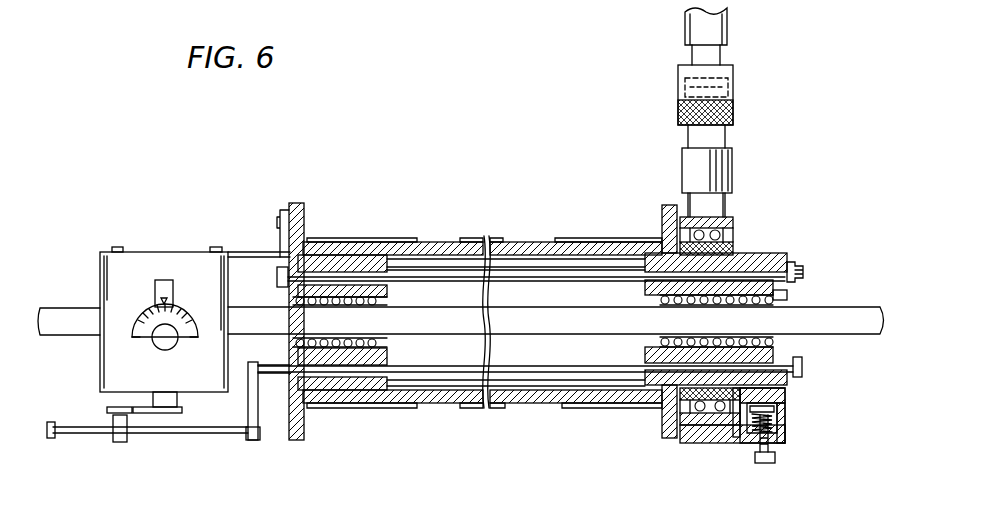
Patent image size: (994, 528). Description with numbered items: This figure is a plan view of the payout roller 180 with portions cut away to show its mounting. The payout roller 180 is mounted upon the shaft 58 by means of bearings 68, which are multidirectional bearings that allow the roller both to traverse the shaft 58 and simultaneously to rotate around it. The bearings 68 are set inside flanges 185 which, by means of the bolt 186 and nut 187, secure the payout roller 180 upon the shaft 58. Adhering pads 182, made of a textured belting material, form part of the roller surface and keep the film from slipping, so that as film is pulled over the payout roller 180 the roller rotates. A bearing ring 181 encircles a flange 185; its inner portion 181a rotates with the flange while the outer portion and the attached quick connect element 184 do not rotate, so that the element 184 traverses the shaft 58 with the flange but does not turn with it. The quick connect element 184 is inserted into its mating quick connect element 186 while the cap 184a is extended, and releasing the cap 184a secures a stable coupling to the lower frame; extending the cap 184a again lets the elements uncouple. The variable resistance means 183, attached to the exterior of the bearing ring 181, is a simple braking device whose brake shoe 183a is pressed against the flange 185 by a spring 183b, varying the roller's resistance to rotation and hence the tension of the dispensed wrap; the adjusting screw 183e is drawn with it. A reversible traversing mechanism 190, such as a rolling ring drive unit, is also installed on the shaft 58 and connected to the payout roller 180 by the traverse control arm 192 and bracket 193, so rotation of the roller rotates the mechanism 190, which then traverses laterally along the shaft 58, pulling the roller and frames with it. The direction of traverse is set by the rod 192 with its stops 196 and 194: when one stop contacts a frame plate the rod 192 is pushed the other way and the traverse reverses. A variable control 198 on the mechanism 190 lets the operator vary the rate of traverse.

The shaft 58 is at (866, 334).
The bearings 68 is at (290, 298).
The payout roller 180 is at (440, 240).
The bearing ring 181 is at (733, 217).
The inner portion of the bearing ring 181a is at (735, 243).
The adhering pads 182 is at (352, 237).
The variable resistance means 183 is at (730, 444).
The brake shoe 183a is at (784, 392).
The spring 183b is at (780, 418).
The adjusting screw 183e is at (775, 460).
The quick connect element 184 is at (733, 113).
The cap 184a is at (732, 82).
The flanges 185 is at (293, 203).
The bolt 186 is at (722, 53).
The nut 187 is at (797, 262).
The reversible traversing mechanism 190 is at (108, 268).
The traverse control arm 192 is at (183, 435).
The bracket 193 is at (155, 251).
The stop 194 is at (50, 438).
The stop 196 is at (802, 367).
The variable control 198 is at (183, 311).